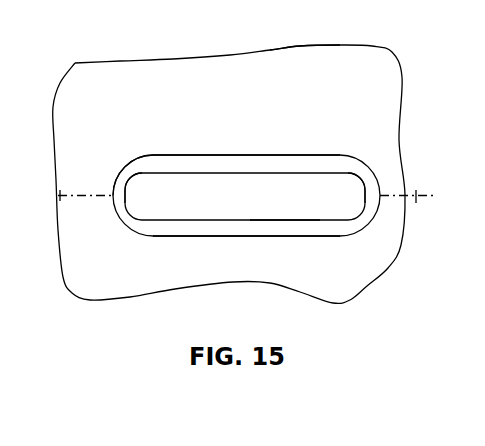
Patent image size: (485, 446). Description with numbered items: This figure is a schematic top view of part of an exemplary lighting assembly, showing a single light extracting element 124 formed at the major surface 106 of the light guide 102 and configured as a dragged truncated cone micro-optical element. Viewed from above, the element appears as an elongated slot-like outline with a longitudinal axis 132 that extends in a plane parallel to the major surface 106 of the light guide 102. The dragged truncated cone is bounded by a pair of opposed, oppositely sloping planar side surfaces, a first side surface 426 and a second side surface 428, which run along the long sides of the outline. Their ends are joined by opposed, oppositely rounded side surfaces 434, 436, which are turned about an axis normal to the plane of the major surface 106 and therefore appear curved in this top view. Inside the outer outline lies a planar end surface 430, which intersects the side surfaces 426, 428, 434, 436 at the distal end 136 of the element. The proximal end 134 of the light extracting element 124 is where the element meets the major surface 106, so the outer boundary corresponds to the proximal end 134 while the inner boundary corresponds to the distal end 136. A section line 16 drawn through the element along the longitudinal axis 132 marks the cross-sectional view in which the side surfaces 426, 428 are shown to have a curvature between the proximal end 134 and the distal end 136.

The light guide 102 is at (357, 70).
The major surface 106 is at (300, 57).
The light extracting element 124 is at (162, 140).
The proximal end 134 is at (292, 146).
The distal end 136 is at (294, 210).
The first side surface 426 is at (180, 163).
The second side surface 428 is at (172, 224).
The planar end surface 430 is at (313, 190).
The rounded side surface 434 is at (123, 183).
The rounded side surface 436 is at (366, 178).
The longitudinal axis 132 is at (416, 203).
The section line 16- 16 is at (239, 155).